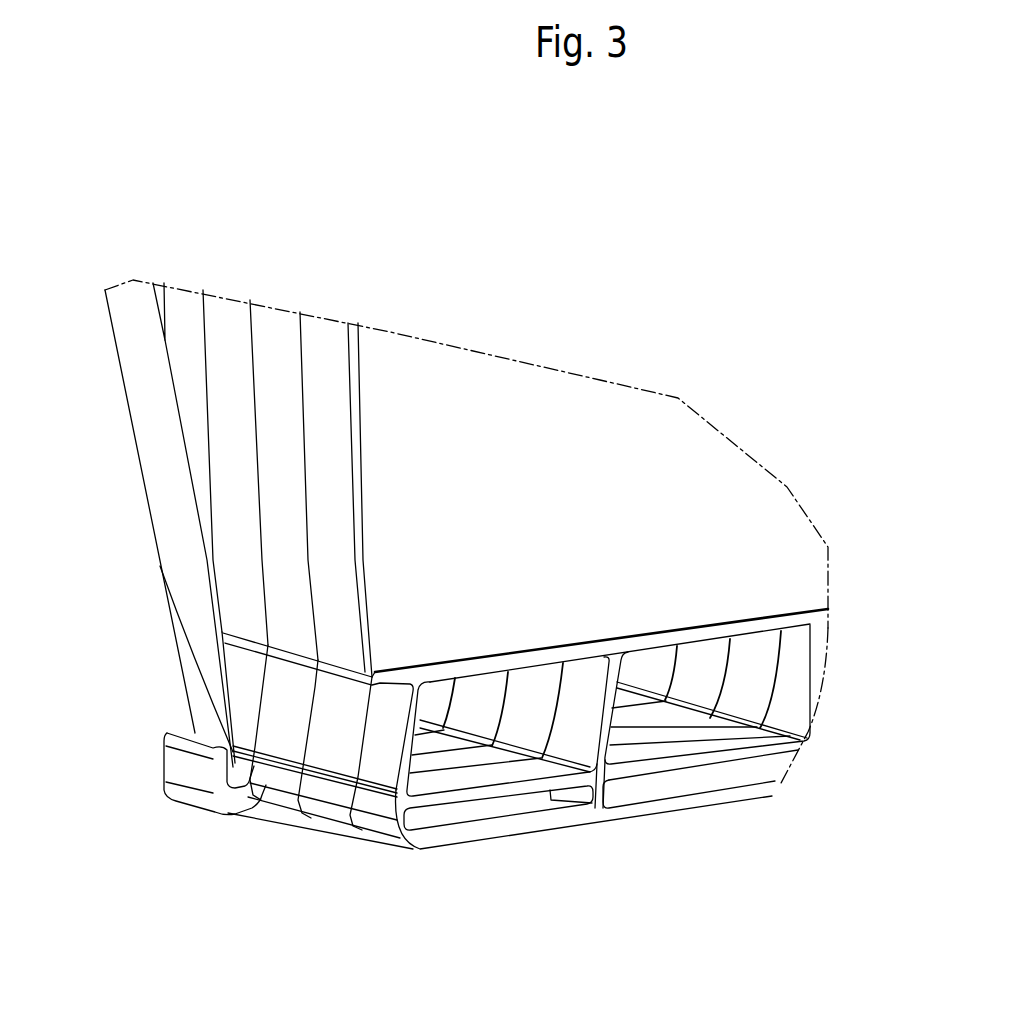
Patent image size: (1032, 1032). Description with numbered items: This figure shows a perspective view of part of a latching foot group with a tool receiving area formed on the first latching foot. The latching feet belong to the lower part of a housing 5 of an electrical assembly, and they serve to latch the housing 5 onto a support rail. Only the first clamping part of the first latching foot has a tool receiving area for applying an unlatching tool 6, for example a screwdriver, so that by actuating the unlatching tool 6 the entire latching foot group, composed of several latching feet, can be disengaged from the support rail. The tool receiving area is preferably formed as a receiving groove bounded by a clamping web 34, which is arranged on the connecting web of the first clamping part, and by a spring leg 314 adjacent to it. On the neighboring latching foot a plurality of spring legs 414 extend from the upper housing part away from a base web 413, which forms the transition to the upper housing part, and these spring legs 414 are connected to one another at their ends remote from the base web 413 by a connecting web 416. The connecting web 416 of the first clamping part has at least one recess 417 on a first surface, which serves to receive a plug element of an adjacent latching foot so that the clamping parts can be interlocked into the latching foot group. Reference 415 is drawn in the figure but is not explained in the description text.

The housing 5 is at (410, 380).
The unlatching tool 6 is at (133, 340).
The clamping web 34 is at (191, 762).
The spring leg 314 is at (243, 677).
The base web 413 is at (538, 654).
The spring leg 414 is at (814, 648).
The ribs 415 is at (577, 703).
The connecting web 416 is at (678, 808).
The recess 417 is at (509, 808).